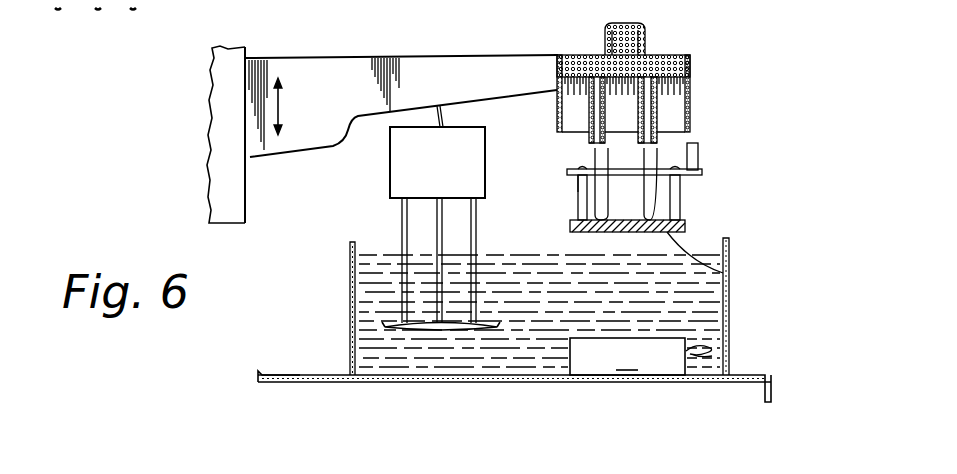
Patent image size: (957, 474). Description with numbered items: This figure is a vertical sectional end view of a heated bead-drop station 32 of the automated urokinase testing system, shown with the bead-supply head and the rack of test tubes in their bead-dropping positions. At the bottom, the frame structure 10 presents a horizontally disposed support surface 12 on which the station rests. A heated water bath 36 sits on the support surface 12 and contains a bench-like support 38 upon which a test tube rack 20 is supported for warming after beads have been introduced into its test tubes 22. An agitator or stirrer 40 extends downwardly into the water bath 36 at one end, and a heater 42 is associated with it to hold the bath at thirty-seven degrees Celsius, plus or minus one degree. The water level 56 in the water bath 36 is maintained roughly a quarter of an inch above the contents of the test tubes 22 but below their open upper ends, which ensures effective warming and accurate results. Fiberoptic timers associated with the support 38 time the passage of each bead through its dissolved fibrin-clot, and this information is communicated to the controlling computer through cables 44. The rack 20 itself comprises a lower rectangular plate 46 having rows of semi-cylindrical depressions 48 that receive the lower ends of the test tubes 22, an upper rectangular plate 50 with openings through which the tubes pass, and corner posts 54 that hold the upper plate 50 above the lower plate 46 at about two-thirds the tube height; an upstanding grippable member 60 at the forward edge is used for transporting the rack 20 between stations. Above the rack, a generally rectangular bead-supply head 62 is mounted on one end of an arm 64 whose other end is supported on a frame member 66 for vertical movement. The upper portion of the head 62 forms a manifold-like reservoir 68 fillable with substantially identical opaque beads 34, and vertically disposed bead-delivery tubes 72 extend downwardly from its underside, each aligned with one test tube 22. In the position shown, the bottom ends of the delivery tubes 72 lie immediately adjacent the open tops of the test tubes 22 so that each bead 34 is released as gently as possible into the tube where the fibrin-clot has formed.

The frame structure 10 is at (546, 369).
The support surface 12 is at (293, 378).
The test tube rack 20 is at (667, 198).
The test tube 22 is at (592, 204).
The bead-drop station 32 is at (401, 79).
The opaque bead 34 is at (663, 56).
The heated water bath 36 is at (352, 272).
The bench-like support 38 is at (627, 356).
The agitator or stirrer 40 is at (420, 332).
The heater 42 is at (388, 168).
The cables 44 is at (730, 357).
The lower rectangular plate 46 is at (723, 273).
The semi-cylindrical depressions 48 is at (570, 226).
The upper rectangular plate 50 is at (625, 178).
The corner posts 54 is at (578, 188).
The water level 56 is at (377, 240).
The grippable member 60 is at (702, 155).
The bead-supply head 62 is at (642, 81).
The arm 64 is at (332, 56).
The frame member 66 is at (218, 125).
The manifold-like reservoir 68 is at (557, 82).
The bead-delivery tubes 72 is at (592, 140).